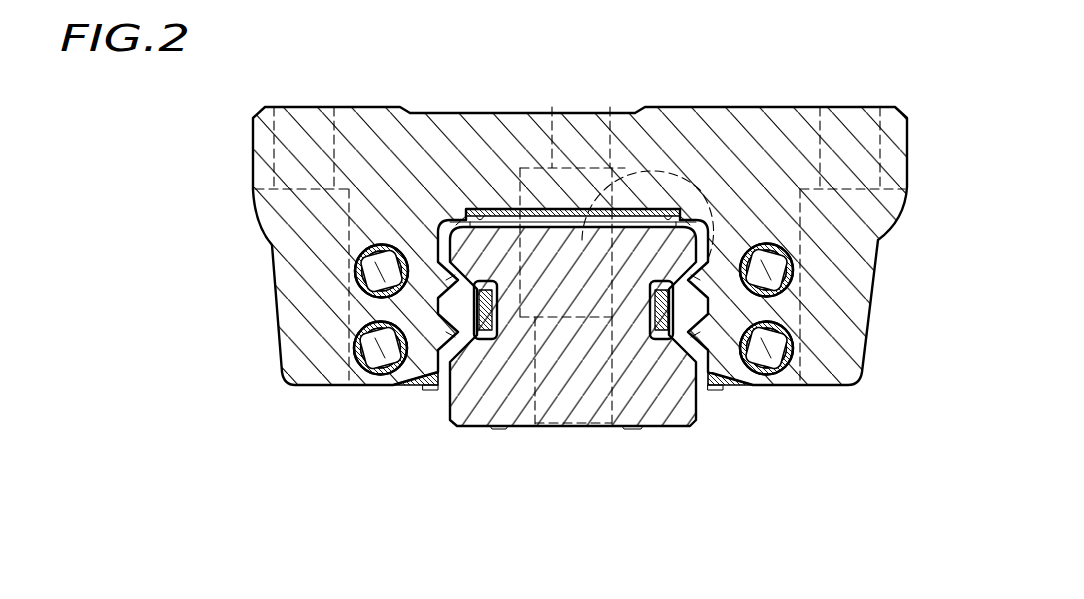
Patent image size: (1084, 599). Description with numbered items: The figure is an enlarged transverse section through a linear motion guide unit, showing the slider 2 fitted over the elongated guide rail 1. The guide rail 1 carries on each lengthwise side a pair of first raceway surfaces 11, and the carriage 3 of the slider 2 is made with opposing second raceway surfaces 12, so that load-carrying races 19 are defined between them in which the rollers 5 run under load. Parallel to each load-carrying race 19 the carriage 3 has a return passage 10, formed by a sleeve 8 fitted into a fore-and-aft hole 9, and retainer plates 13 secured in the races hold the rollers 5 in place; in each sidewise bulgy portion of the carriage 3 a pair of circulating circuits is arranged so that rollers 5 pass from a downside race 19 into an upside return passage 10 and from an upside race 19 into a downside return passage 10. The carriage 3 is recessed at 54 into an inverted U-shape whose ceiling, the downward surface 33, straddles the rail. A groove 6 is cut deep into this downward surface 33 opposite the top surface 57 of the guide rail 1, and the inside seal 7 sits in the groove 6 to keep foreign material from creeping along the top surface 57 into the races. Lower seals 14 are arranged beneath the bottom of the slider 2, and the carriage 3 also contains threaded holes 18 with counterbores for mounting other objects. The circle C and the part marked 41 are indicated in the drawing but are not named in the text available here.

The guide rail 1 is at (516, 400).
The slider 2 is at (806, 107).
The carriage 3 is at (745, 175).
The roller 5 is at (358, 262).
The groove 6 is at (500, 222).
The inside seal 7 is at (515, 209).
The sleeve 8 is at (370, 355).
The fore-and-aft hole 9 is at (366, 358).
The return passage 10 is at (362, 278).
The first raceway surface 11 is at (440, 262).
The second raceway surface 12 is at (476, 300).
The retainer plate 13 is at (487, 342).
The lower seal 14 is at (422, 382).
The threaded hole 18 is at (318, 106).
The load-carrying race 19 is at (475, 212).
The downward surface 33 is at (565, 209).
The spacer 41 is at (718, 390).
The recess 54 is at (595, 330).
The top surface 57 is at (560, 330).
The center of curvature C is at (690, 175).